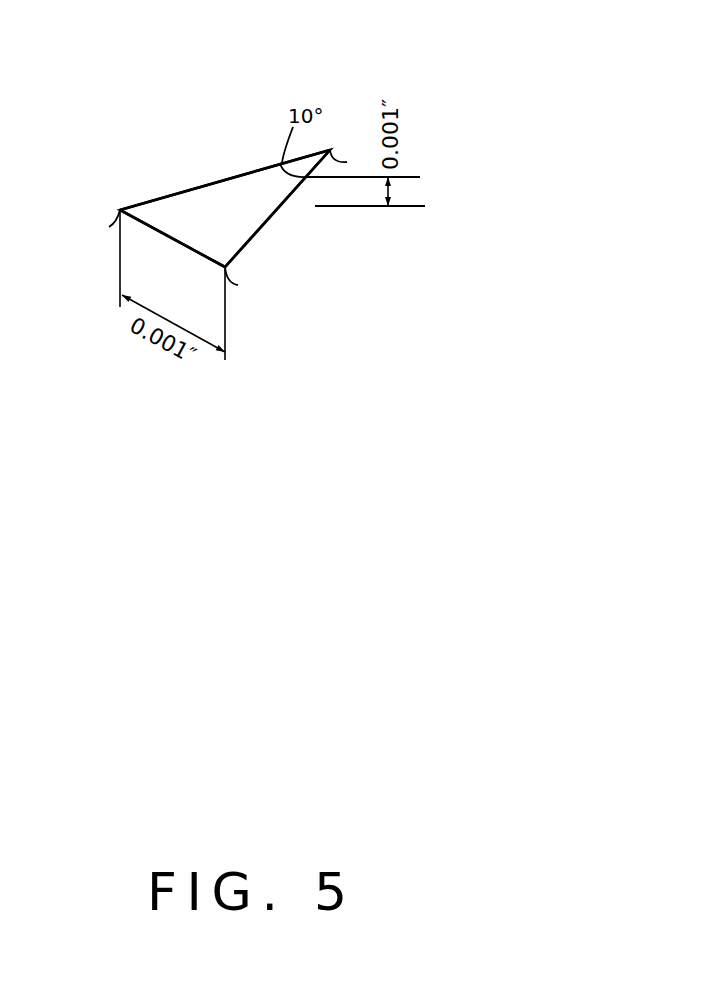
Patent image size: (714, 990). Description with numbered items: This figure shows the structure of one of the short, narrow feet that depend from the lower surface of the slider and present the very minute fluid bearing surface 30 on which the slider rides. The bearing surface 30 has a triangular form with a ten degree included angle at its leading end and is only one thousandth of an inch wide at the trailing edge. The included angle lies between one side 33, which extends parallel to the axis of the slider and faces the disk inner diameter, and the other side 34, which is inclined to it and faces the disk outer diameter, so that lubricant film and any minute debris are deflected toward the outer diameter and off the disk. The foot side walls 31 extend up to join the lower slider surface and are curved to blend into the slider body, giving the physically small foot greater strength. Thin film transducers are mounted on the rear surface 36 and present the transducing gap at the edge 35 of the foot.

The fluid bearing surface 30 is at (259, 178).
The foot side wall 31 is at (242, 268).
The side parallel to slider axis 33 is at (200, 185).
The inclined side 34 is at (277, 210).
The edge of the foot 35 is at (150, 226).
The rear surface 36 is at (142, 233).